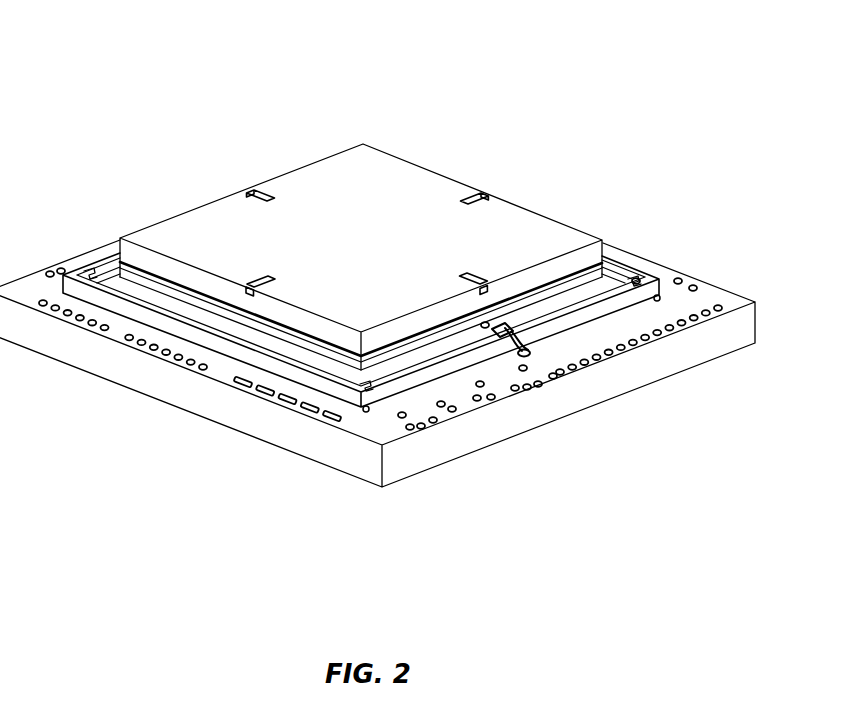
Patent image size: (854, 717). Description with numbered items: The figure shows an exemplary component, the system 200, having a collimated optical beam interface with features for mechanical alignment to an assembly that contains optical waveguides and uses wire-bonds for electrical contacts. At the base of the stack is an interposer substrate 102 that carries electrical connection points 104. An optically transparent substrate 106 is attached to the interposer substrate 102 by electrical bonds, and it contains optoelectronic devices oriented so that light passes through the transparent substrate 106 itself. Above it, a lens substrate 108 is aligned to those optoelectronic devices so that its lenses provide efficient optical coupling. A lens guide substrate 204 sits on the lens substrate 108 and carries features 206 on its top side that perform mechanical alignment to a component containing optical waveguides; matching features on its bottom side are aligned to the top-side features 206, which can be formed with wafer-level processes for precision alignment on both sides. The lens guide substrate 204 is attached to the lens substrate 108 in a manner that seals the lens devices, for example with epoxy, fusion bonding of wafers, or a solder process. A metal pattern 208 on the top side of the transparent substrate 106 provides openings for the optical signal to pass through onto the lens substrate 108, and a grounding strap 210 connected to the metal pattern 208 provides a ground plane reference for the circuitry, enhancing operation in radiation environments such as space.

The system 200 is at (377, 264).
The interposer substrate 102 is at (128, 359).
The electrical connection points 104 is at (690, 279).
The optically transparent substrate 106 is at (253, 355).
The lens substrate 108 is at (373, 360).
The lens guide substrate 204 is at (423, 322).
The features 206 is at (262, 282).
The metal pattern 208 is at (618, 275).
The grounding strap 210 is at (530, 344).